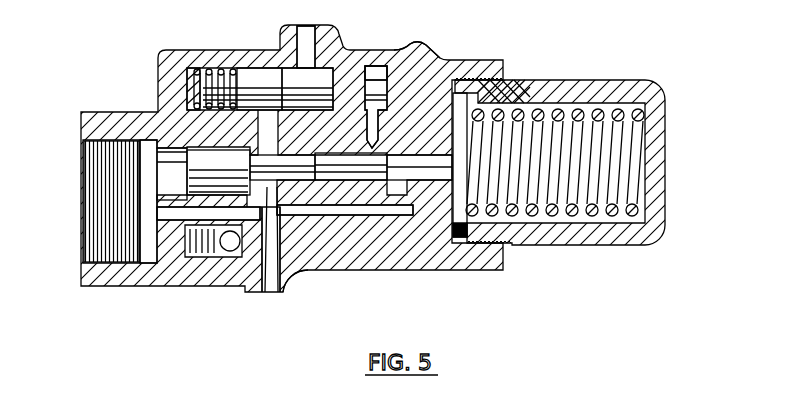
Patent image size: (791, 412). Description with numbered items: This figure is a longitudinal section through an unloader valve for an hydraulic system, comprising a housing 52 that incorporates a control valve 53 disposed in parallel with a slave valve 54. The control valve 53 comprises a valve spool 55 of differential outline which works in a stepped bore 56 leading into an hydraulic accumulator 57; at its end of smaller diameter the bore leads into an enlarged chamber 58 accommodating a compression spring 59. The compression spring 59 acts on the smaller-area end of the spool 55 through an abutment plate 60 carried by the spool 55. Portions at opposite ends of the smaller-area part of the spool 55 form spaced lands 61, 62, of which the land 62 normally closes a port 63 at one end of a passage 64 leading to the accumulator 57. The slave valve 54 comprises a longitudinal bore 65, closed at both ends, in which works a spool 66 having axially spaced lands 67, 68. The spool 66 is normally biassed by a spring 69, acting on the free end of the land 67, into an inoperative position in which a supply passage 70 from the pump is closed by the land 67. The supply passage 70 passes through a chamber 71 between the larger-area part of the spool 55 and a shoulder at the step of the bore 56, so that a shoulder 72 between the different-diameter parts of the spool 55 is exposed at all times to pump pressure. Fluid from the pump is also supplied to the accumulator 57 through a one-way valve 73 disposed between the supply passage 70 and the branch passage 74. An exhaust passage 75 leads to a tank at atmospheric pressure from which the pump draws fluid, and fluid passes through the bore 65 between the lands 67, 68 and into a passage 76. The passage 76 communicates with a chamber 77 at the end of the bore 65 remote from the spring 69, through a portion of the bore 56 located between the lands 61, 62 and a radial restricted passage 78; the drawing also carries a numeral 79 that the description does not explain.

The housing 52 is at (412, 73).
The control valve 53 is at (207, 152).
The slave valve 54 is at (248, 66).
The valve spool 55 is at (370, 75).
The stepped bore 56 is at (130, 142).
The hydraulic accumulator 57 is at (110, 263).
The enlarged chamber 58 is at (563, 113).
The compression spring 59 is at (615, 112).
The abutment plate 60 is at (513, 100).
The land 61 is at (405, 162).
The land 62 is at (300, 168).
The port 63 is at (360, 162).
The passage 64 is at (188, 220).
The longitudinal bore 65 is at (215, 68).
The spool 66 is at (352, 158).
The land 67 is at (271, 80).
The land 68 is at (377, 72).
The spring 69 is at (192, 70).
The supply passage 70 is at (298, 275).
The chamber 71 is at (282, 272).
The shoulder 72 is at (268, 260).
The one-way valve 73 is at (228, 251).
The branch passage 74 is at (165, 243).
The exhaust passage 75 is at (306, 42).
The passage 76 is at (345, 215).
The chamber 77 is at (414, 72).
The radial restricted passage 78 is at (470, 100).
The inlet port 79 is at (140, 186).